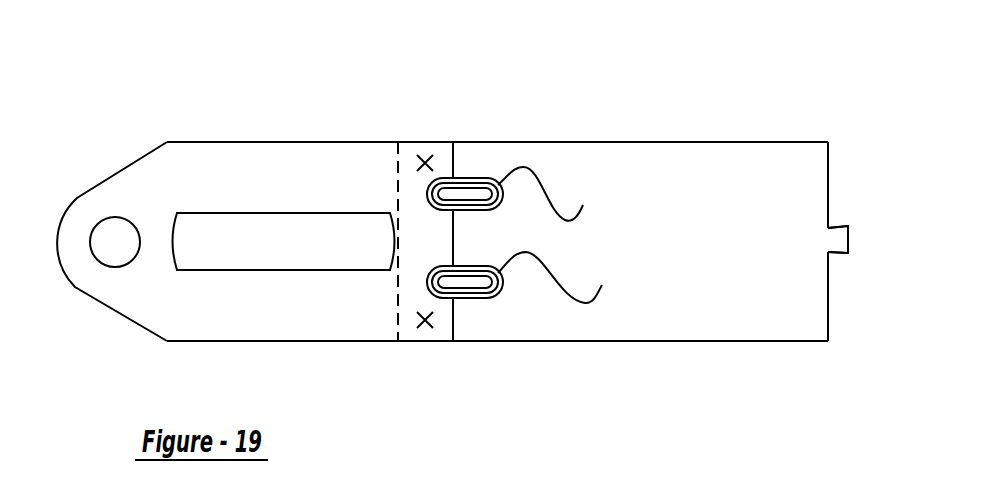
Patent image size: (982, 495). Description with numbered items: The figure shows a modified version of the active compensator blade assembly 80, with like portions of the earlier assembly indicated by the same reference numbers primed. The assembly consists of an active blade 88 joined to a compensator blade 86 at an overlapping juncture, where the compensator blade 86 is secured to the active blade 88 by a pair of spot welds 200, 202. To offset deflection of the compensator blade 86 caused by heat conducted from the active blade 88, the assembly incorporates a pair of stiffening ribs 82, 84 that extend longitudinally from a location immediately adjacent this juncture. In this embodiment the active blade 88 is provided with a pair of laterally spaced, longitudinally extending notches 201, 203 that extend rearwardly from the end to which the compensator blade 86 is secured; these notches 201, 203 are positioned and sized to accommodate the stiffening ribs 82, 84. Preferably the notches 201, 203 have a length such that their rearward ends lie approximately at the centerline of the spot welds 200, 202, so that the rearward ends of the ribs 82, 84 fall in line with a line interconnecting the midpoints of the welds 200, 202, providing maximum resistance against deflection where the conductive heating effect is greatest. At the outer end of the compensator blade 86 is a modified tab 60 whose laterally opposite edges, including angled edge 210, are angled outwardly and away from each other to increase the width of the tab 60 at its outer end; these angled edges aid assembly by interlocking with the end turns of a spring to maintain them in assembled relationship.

The active compensator blade assembly 80 is at (80, 156).
The active blade 88 is at (267, 163).
The compensator blade 86 is at (768, 160).
The tab 60 is at (842, 238).
The angled edge 210 is at (833, 229).
The spot weld 200 is at (427, 162).
The spot weld 202 is at (427, 328).
The notch 201 is at (454, 188).
The notch 203 is at (452, 282).
The stiffening rib 82 is at (549, 194).
The stiffening rib 84 is at (557, 277).